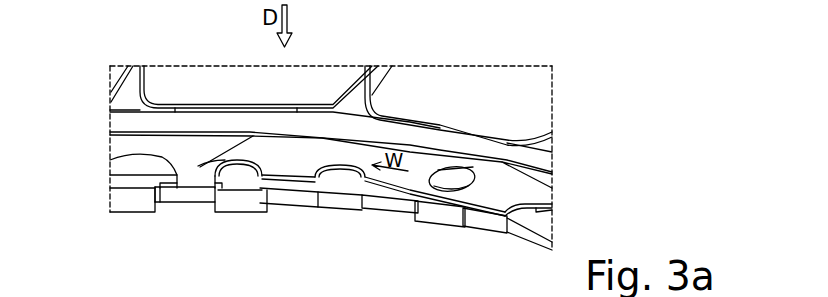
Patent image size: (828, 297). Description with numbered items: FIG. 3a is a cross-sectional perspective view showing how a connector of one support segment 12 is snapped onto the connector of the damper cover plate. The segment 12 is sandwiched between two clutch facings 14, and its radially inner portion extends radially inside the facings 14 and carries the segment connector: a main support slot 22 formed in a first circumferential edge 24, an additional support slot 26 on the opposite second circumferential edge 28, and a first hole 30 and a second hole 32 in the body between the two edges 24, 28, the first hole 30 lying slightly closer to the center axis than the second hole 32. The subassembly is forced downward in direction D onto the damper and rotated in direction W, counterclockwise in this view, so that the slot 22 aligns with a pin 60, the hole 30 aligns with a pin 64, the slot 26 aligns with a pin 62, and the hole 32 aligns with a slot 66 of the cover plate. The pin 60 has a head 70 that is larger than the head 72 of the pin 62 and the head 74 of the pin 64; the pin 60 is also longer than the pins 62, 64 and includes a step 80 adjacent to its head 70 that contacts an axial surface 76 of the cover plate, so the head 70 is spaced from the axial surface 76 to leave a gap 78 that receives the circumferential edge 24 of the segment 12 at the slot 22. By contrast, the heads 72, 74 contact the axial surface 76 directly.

The support segment 12 is at (490, 180).
The clutch facing 14 is at (537, 163).
The main support slot 22 is at (262, 150).
The first circumferential edge 24 is at (208, 158).
The additional support slot 26 is at (527, 209).
The second circumferential edge 28 is at (539, 212).
The first hole 30 is at (337, 160).
The second hole 32 is at (457, 167).
The pin 60 is at (127, 193).
The pin 62 is at (447, 213).
The pin 64 is at (238, 195).
The slot 66 is at (373, 202).
The head 70 is at (120, 167).
The head 72 is at (433, 208).
The head 74 is at (253, 170).
The axial surface 76 is at (192, 186).
The gap 78 is at (165, 204).
The step 80 is at (154, 201).